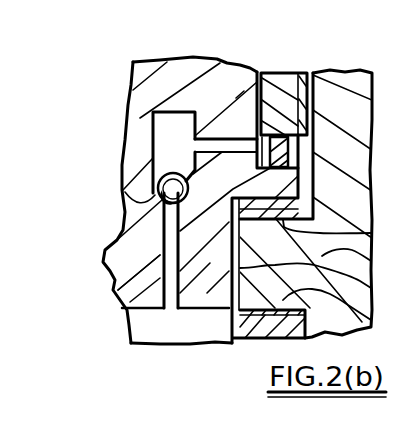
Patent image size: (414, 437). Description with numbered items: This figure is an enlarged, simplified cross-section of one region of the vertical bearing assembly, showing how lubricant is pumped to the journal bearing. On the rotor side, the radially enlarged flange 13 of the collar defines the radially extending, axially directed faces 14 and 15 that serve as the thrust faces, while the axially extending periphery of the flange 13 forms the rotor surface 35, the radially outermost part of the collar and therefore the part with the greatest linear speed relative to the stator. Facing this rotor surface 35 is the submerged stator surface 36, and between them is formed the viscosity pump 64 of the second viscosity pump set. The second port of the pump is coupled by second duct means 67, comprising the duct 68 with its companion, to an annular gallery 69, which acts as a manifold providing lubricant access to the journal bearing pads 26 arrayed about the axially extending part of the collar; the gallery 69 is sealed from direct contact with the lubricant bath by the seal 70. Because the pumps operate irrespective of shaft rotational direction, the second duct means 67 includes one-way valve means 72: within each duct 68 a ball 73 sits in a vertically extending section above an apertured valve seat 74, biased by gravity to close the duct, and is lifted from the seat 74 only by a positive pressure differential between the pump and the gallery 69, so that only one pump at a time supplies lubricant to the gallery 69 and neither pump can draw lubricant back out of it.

The one-way valve means 72 is at (140, 137).
The ball 73 is at (153, 167).
The apertured valve seat 74 is at (124, 190).
The stator surface 36 is at (230, 217).
The viscosity pump 64 is at (93, 274).
The second duct means 67 is at (163, 249).
The duct 68 is at (165, 275).
The annular gallery 69 is at (252, 137).
The bearing pads 26 is at (277, 88).
The seal 70 is at (296, 165).
The face 15 is at (371, 235).
The flange 13 is at (371, 260).
The rotor surface 35 is at (371, 288).
The face 14 is at (371, 319).